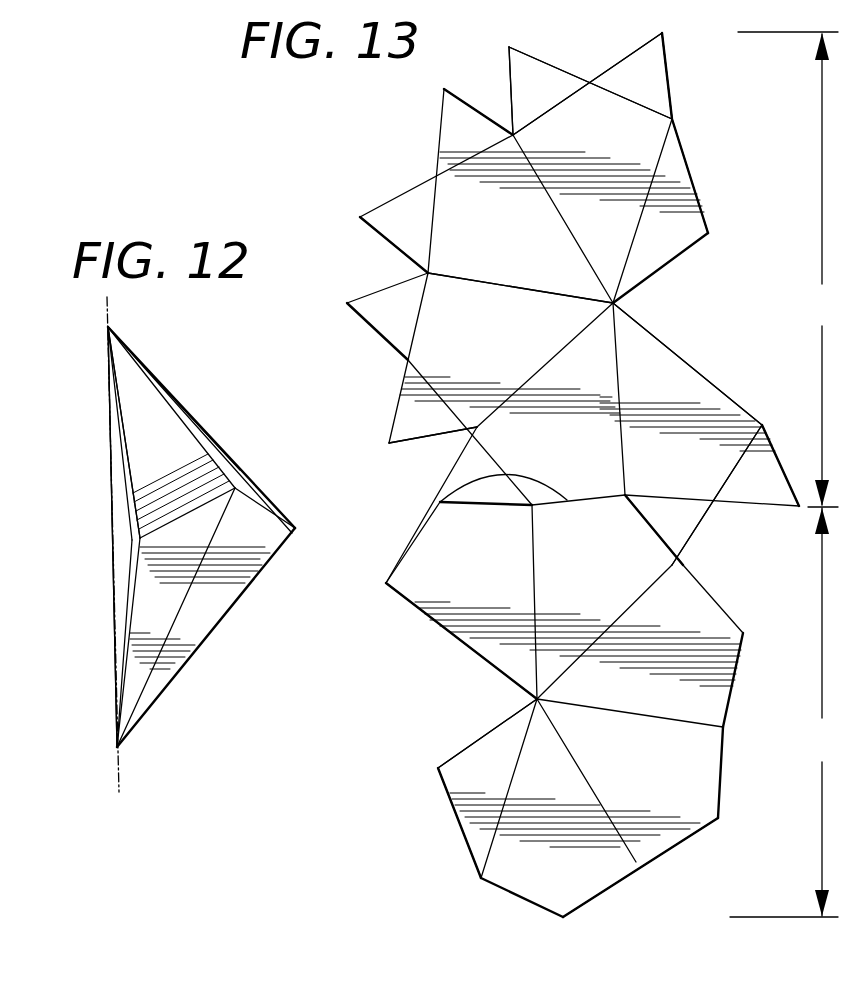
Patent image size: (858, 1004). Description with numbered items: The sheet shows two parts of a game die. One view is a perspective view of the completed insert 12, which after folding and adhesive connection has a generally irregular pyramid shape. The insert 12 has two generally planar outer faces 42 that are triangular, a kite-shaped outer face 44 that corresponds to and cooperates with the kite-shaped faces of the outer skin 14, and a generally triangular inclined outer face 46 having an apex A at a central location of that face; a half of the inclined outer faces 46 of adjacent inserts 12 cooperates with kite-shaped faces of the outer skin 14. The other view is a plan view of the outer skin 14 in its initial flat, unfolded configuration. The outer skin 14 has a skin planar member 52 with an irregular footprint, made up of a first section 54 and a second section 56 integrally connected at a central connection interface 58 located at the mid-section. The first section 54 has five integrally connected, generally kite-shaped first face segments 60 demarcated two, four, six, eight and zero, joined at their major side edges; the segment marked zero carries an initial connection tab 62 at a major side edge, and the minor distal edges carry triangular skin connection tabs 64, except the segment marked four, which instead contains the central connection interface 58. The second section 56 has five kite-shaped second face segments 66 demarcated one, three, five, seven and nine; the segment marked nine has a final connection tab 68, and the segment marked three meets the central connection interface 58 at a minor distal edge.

In FIG. 12, the insert 12 is at (172, 356).
In FIG. 12, the planar outer faces 42 is at (122, 527).
In FIG. 12, the kite-shaped outer face 44 is at (252, 536).
In FIG. 12, the inclined outer face 46 is at (148, 434).
In FIG. 12, the apex A is at (192, 428).
In FIG. 13, the outer skin 14 is at (680, 36).
In FIG. 13, the skin planar member 52 is at (456, 196).
In FIG. 13, the first section 54 is at (788, 269).
In FIG. 13, the second section 56 is at (784, 712).
In FIG. 13, the central connection interface 58 is at (445, 490).
In FIG. 13, the first face segments 60 is at (483, 183).
In FIG. 13, the initial connection tab 62 is at (670, 162).
In FIG. 13, the skin connection tabs 64 is at (531, 80).
In FIG. 13, the second face segments 66 is at (623, 573).
In FIG. 13, the final connection tab 68 is at (487, 767).